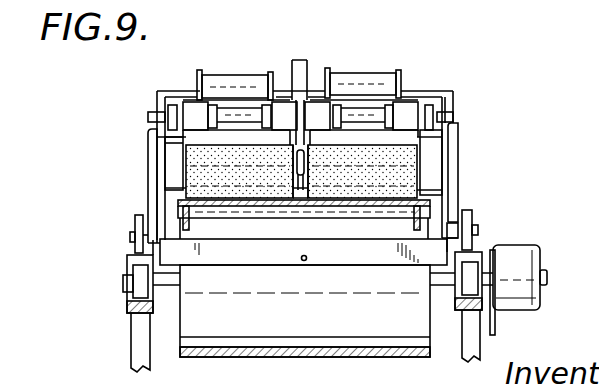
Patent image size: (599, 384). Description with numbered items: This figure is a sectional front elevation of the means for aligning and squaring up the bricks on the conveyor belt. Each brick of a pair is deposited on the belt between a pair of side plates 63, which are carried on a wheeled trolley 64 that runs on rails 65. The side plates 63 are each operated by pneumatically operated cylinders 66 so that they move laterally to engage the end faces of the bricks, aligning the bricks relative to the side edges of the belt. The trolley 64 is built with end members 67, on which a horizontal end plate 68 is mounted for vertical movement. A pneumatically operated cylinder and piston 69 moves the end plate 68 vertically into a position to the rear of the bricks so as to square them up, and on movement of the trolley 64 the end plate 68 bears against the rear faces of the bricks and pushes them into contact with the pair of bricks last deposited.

The side plates 63 is at (306, 144).
The wheeled trolley 64 is at (150, 171).
The rails 65 is at (138, 252).
The pneumatically operated cylinders 66 is at (238, 86).
The end members 67 is at (455, 152).
The horizontal end plate 68 is at (432, 180).
The pneumatically operated cylinder and piston 69 is at (304, 70).